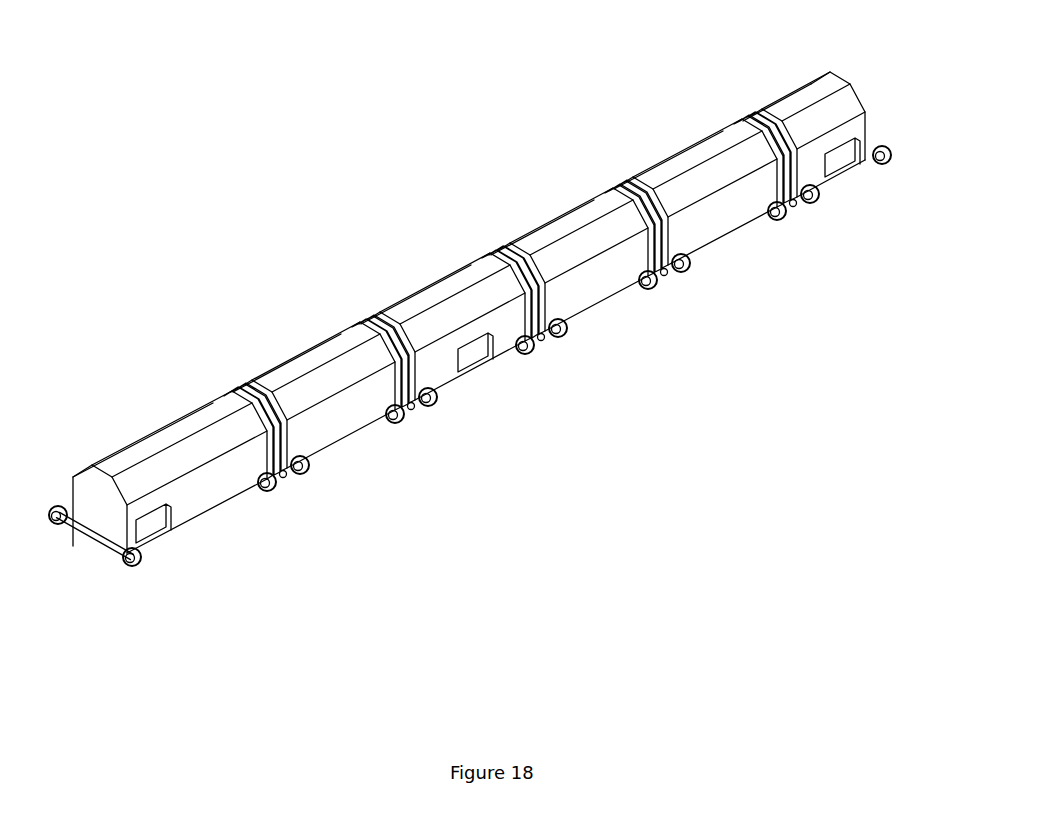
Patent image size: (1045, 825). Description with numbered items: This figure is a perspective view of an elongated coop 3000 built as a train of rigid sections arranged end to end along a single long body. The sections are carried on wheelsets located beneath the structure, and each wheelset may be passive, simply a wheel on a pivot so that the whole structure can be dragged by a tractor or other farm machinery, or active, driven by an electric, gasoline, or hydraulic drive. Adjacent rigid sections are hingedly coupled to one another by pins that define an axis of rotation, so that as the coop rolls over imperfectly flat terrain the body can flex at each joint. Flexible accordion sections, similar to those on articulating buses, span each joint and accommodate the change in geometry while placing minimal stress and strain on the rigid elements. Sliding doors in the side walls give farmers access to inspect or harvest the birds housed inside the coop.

The elongated coop 3000 is at (487, 362).